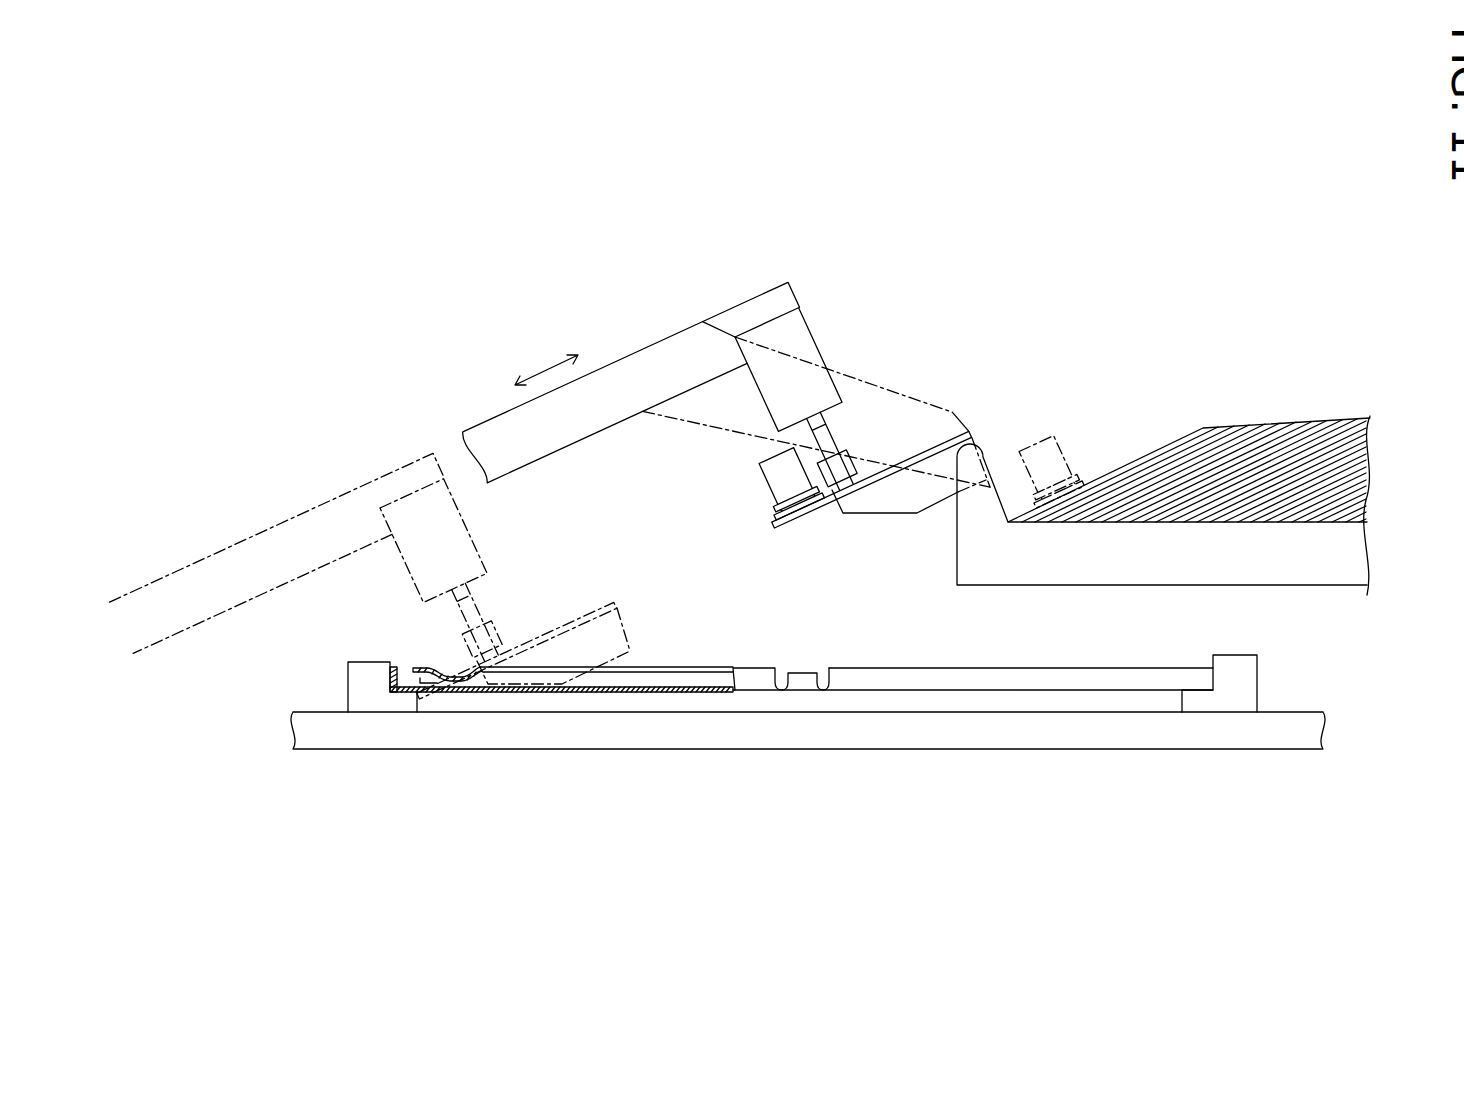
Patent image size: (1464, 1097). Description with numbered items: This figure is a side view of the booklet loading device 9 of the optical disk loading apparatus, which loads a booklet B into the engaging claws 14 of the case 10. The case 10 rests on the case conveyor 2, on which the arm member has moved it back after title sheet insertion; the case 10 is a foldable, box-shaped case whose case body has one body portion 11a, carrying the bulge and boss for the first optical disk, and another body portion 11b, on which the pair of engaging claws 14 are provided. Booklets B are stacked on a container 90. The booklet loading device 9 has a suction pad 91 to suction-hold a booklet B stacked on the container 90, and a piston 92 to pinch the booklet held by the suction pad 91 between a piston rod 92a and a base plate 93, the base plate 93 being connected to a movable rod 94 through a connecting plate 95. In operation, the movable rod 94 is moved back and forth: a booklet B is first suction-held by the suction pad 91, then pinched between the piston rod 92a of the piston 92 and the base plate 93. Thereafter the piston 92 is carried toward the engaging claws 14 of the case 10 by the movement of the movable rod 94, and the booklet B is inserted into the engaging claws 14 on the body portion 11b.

The case conveyor 2 is at (1022, 740).
The booklet loading device 9 is at (928, 322).
The case 10 is at (850, 625).
The body portion 11a is at (1084, 667).
The body portion 11b is at (745, 672).
The engaging claws 14 is at (426, 666).
The container 90 is at (1250, 570).
The suction pad 91 is at (776, 480).
The piston 92 is at (805, 332).
The piston rod 92a is at (832, 438).
The base plate 93 is at (866, 507).
The movable rod 94 is at (683, 346).
The connecting plate 95 is at (935, 388).
The booklet B is at (1175, 441).